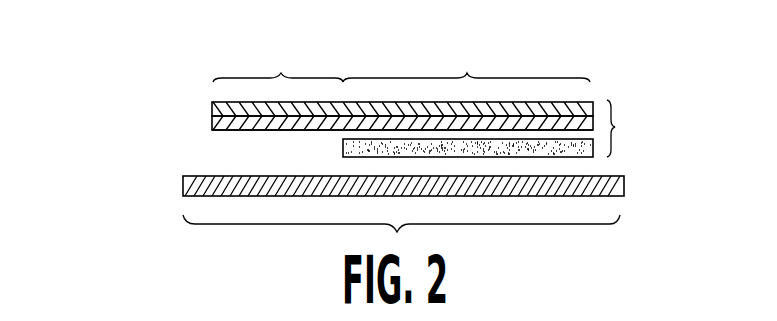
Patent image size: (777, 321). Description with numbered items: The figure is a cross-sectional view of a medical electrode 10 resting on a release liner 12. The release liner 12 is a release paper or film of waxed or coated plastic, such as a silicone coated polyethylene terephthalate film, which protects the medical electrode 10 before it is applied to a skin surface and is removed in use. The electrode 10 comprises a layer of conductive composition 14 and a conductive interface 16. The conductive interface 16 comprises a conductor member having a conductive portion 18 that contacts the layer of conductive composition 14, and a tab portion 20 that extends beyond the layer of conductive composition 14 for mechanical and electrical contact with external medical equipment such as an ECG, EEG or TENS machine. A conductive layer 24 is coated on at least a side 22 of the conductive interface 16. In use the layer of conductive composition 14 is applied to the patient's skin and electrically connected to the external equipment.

The medical electrode 10 is at (626, 128).
The release liner 12 is at (194, 186).
The layer of conductive composition 14 is at (345, 147).
The conductive interface 16 is at (212, 107).
The conductive portion 18 is at (466, 63).
The tab portion 20 is at (278, 63).
The side of conductive interface 22 is at (212, 125).
The conductive layer 24 is at (252, 130).